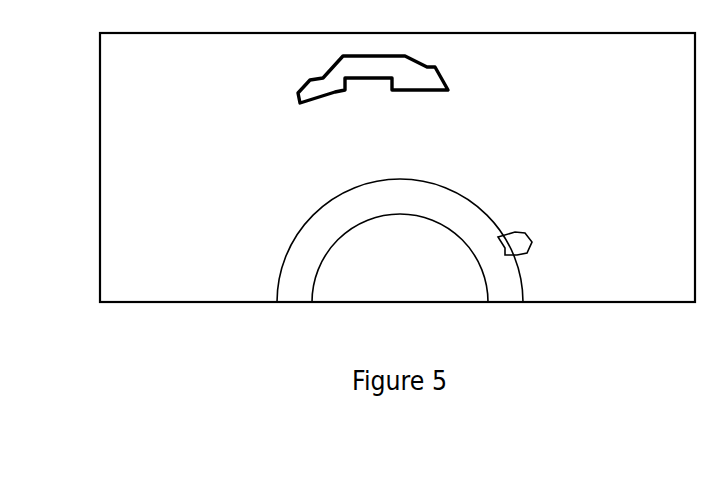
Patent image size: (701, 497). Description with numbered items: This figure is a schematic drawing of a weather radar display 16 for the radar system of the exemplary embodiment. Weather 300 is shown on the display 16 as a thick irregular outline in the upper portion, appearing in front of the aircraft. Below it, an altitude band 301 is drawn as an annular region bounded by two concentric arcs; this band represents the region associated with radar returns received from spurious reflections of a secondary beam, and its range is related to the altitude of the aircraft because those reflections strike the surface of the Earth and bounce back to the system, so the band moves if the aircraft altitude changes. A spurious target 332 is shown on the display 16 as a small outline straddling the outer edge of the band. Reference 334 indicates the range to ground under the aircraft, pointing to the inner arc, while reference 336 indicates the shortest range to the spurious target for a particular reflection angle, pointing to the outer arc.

The display 16 is at (100, 138).
The weather 300 is at (448, 91).
The altitude band 301 is at (438, 230).
The spurious target 332 is at (498, 237).
The range to ground 334 is at (450, 232).
The shortest range to spurious target 336 is at (519, 267).